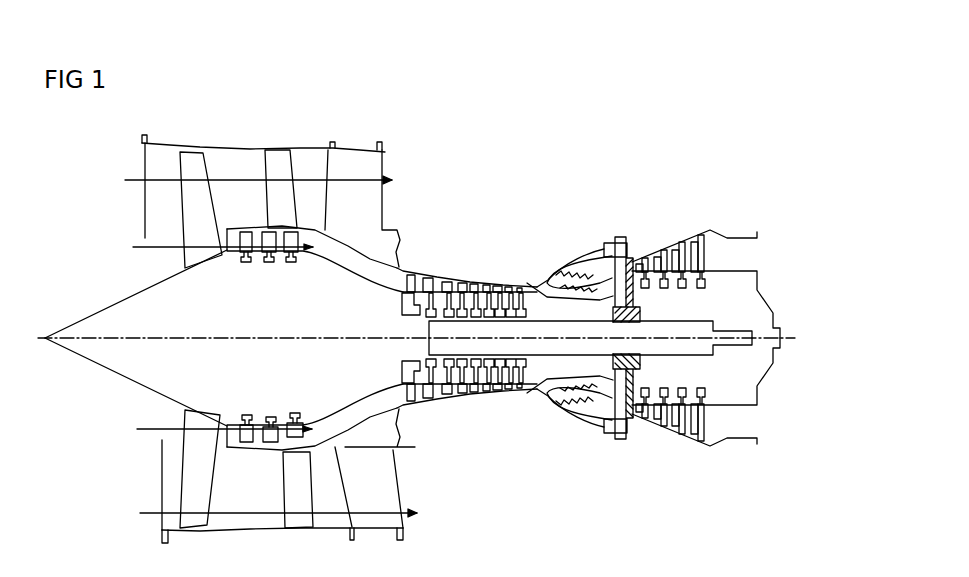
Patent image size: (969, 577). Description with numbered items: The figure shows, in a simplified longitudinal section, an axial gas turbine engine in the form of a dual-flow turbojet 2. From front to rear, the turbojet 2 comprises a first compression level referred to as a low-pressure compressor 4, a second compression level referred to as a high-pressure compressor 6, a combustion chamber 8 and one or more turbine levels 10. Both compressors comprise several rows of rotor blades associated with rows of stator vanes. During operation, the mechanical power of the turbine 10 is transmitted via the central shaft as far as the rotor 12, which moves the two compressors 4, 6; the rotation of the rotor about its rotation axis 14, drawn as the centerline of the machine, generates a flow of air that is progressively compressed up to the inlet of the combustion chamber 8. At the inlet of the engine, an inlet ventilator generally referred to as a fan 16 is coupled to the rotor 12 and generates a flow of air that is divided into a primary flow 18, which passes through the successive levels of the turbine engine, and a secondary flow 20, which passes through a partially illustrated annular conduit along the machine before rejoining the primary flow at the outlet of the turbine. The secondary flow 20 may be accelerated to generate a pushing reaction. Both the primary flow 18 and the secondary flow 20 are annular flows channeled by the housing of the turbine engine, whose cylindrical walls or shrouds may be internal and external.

The turbojet 2 is at (570, 170).
The low-pressure compressor 4 is at (247, 257).
The high-pressure compressor 6 is at (437, 272).
The combustion chamber 8 is at (563, 282).
The turbine levels 10 is at (688, 240).
The rotor 12 is at (122, 361).
The rotation axis 14 is at (275, 340).
The fan 16 is at (197, 203).
The primary flow 18 is at (212, 338).
The secondary flow 20 is at (260, 344).